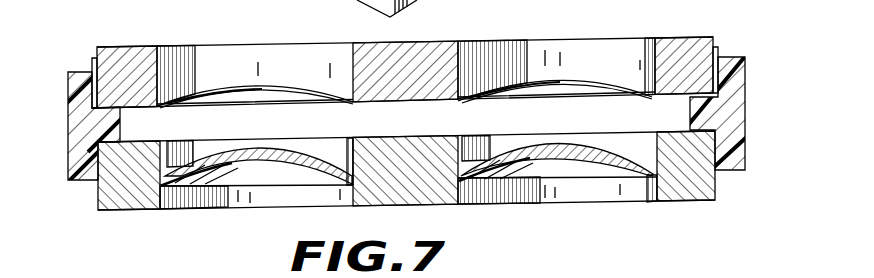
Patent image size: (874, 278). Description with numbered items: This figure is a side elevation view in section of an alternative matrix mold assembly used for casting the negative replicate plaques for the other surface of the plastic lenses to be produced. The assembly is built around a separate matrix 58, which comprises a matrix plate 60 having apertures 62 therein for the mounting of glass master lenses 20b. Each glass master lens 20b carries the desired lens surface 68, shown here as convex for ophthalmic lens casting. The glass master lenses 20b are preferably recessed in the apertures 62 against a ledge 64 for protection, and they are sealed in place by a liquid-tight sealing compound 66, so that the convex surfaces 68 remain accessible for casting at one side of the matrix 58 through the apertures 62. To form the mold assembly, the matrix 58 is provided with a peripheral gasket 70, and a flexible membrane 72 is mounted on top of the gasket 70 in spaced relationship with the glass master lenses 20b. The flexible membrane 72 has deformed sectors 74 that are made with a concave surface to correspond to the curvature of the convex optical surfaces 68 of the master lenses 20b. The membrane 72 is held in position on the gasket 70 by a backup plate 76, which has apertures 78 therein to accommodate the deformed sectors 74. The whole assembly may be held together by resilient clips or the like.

The glass master lenses 20b is at (277, 153).
The matrix 58 is at (717, 182).
The matrix plate 60 is at (122, 205).
The apertures 62 is at (176, 162).
The ledge 64 is at (163, 163).
The sealing compound 66 is at (163, 196).
The lens surfaces 68 is at (230, 158).
The peripheral gasket 70 is at (732, 113).
The flexible membrane 72 is at (110, 102).
The deformed sectors 74 is at (257, 88).
The backup plate 76 is at (678, 50).
The apertures 78 is at (193, 60).